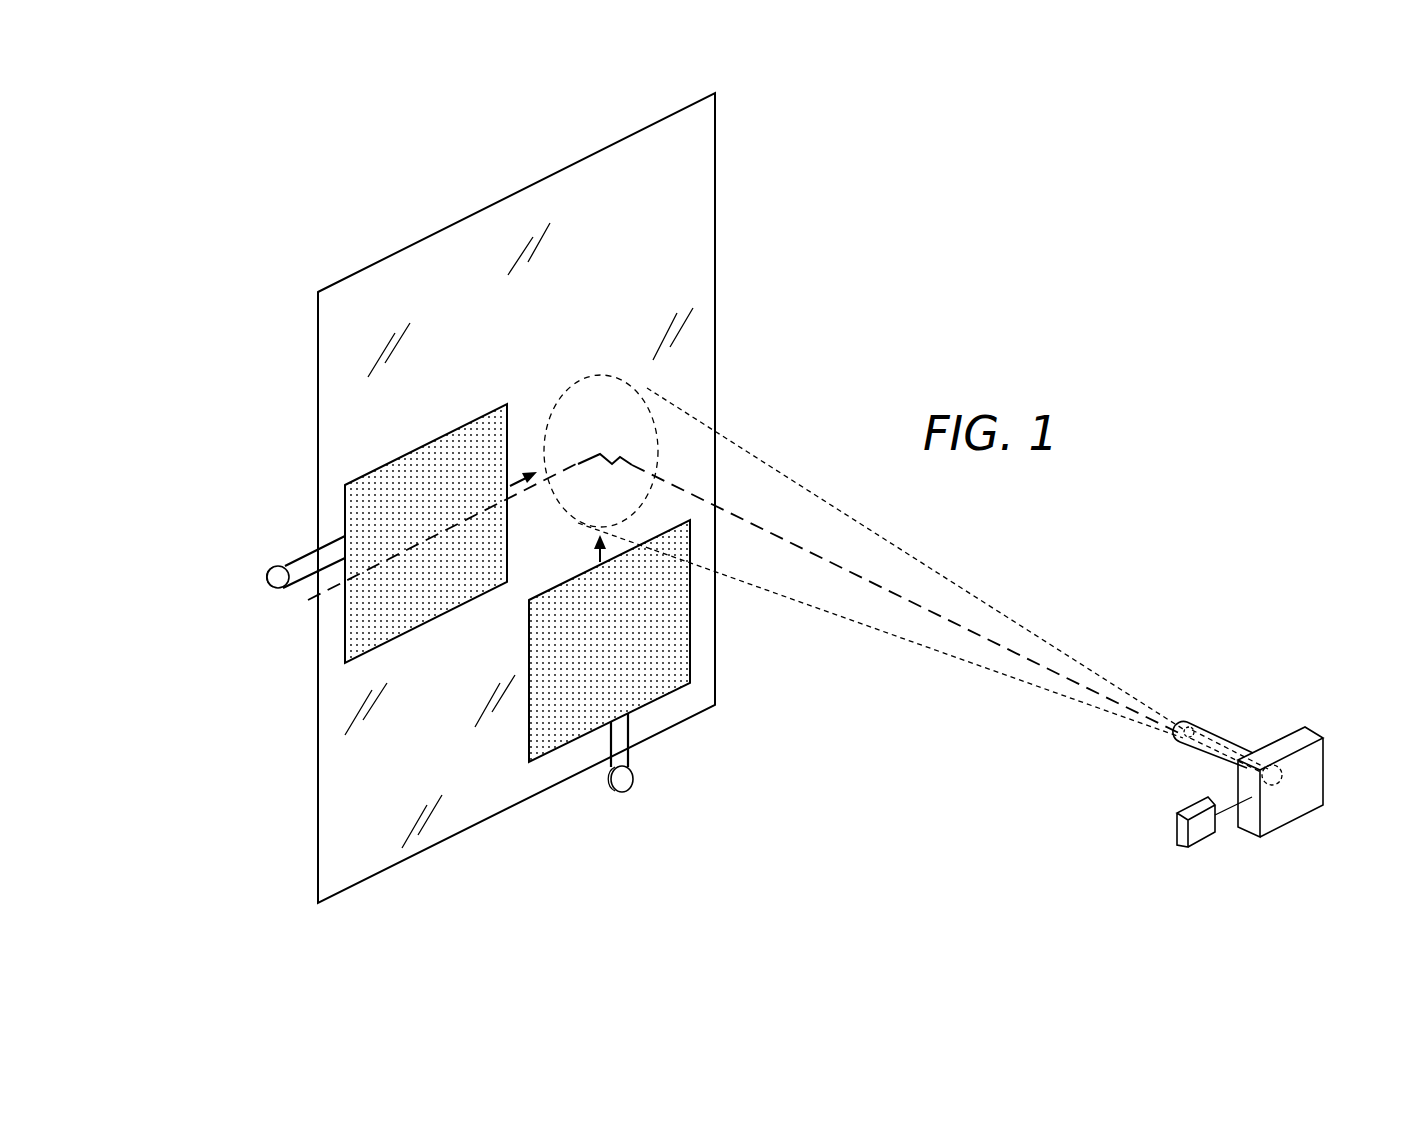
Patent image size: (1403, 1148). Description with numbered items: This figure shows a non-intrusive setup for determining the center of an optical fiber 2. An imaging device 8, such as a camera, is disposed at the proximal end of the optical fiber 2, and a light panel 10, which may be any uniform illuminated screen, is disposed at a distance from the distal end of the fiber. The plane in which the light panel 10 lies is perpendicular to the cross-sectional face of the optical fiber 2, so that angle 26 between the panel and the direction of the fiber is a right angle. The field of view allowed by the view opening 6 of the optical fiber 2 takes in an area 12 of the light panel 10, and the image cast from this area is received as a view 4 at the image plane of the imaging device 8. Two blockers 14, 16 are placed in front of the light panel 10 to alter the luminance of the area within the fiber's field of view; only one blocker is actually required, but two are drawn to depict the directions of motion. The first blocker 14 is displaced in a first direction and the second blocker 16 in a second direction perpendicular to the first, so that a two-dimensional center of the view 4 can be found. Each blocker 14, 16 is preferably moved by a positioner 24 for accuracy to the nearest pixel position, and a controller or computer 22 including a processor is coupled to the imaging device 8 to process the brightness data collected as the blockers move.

The optical fiber 2 is at (1220, 740).
The view as received at image plane of imaging device 4 is at (1283, 776).
The view opening 6 is at (1182, 722).
The imaging device 8 is at (1290, 736).
The light panel 10 is at (700, 177).
The area of light panel 12 is at (653, 470).
The blocker 14 is at (465, 438).
The blocker 16 is at (677, 595).
The controller or computer 22 is at (1177, 828).
The positioner 24 is at (268, 577).
The angle between light panel and direction of optical fiber 26 is at (617, 462).